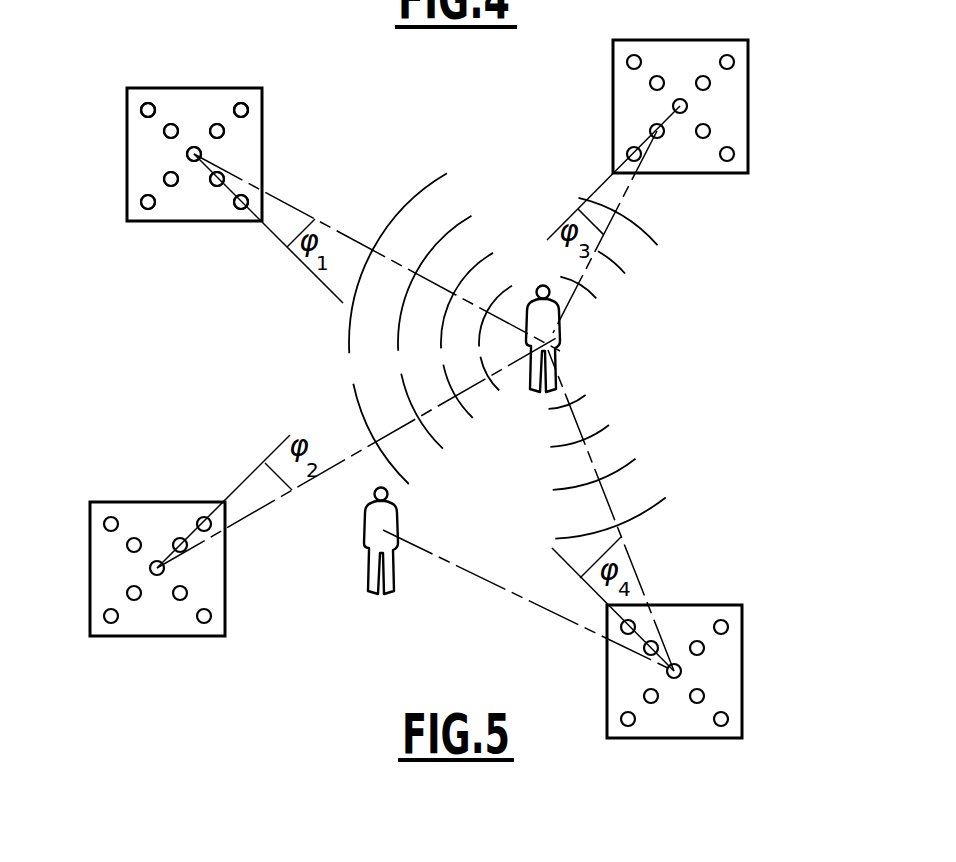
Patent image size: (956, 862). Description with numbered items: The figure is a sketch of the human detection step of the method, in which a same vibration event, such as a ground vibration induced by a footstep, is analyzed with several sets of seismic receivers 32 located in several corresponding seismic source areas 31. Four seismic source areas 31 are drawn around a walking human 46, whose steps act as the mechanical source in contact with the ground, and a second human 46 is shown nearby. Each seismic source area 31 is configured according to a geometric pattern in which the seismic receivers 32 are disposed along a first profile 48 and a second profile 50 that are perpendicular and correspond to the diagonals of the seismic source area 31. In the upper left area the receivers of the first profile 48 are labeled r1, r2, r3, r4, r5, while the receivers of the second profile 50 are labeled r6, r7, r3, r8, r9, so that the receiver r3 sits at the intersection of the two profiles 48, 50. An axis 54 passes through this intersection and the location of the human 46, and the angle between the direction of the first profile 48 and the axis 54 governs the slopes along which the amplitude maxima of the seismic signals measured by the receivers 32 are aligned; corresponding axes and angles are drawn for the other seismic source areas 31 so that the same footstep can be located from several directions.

The seismic source area 31 is at (145, 0).
The seismic receiver 32 is at (152, 182).
The human 46 is at (386, 519).
The first profile 48 is at (138, 92).
The second profile 50 is at (246, 90).
The axis 54 is at (350, 236).
The seismic receiver r1 is at (240, 209).
The seismic receiver r2 is at (217, 186).
The seismic receiver r3 is at (187, 154).
The seismic receiver r4 is at (166, 137).
The seismic receiver r5 is at (141, 112).
The seismic receiver r6 is at (248, 110).
The seismic receiver r7 is at (222, 137).
The seismic receiver r8 is at (171, 186).
The seismic receiver r9 is at (147, 209).